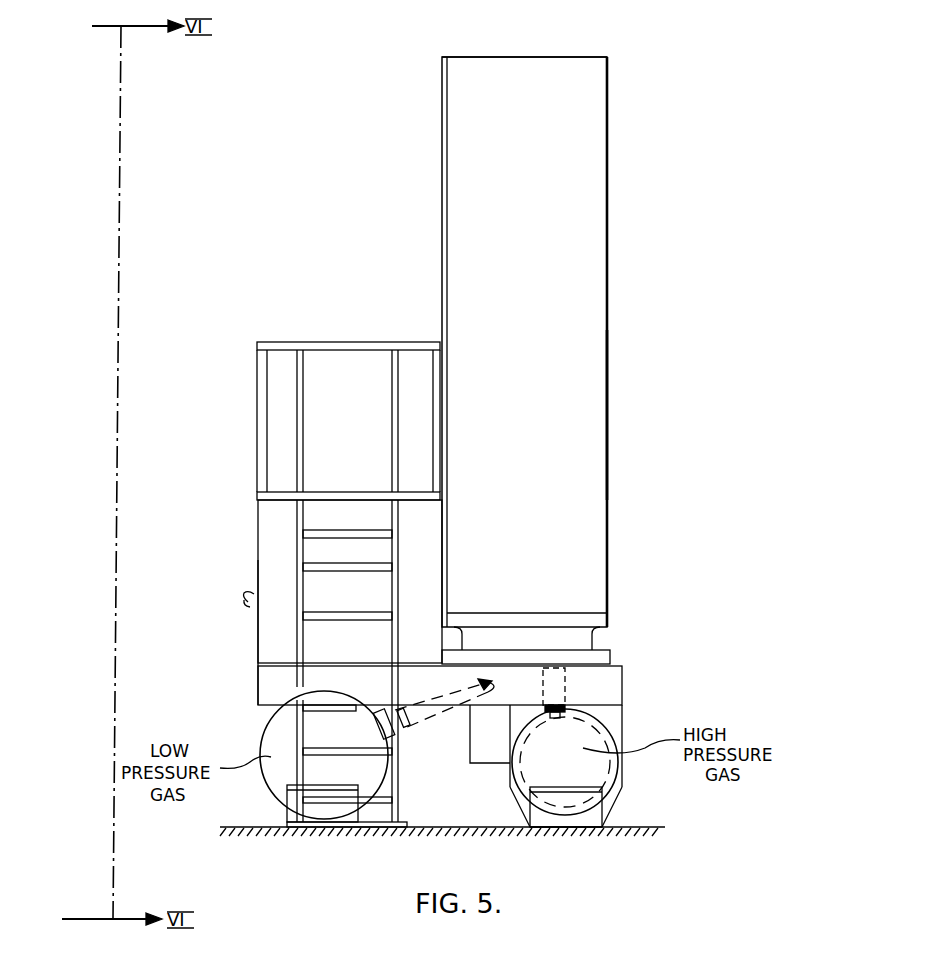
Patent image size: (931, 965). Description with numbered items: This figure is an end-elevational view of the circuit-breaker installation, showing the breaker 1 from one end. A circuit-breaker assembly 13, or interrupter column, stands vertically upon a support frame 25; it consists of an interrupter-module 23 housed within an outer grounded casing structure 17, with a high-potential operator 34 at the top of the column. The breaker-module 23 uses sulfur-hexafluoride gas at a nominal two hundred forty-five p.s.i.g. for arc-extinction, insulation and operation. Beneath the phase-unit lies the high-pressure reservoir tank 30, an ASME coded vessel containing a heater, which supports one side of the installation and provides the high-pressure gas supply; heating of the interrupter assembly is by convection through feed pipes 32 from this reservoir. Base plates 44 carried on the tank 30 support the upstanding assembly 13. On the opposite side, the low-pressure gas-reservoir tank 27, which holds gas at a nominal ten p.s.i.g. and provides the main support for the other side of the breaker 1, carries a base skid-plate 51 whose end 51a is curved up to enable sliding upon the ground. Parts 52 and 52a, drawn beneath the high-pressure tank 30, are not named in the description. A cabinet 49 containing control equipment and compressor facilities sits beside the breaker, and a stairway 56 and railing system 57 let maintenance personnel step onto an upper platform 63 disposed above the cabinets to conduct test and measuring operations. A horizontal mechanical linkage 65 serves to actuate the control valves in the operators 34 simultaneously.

The breaker 1 is at (660, 268).
The circuit-breaker assembly 13 is at (539, 465).
The casing structure 17 is at (607, 413).
The circuit-breaker module 23 is at (577, 341).
The operator 34 is at (597, 166).
The base plate 44 is at (610, 656).
The support frame 25 is at (622, 695).
The feed pipe 32 is at (565, 692).
The cabinet 49 is at (276, 540).
The stairway 56 is at (297, 633).
The railing system 57 is at (352, 343).
The upper platform 63 is at (281, 492).
The low-pressure gas-reservoir tank 27 is at (273, 794).
The high-pressure reservoir tank 30 is at (605, 768).
The horizontal mechanical linkage 65 is at (492, 748).
The base skid-plate 51 is at (296, 828).
The right-hand end of skid-plate 51a is at (290, 798).
The base plate 52 is at (549, 830).
The support box 52a is at (584, 815).